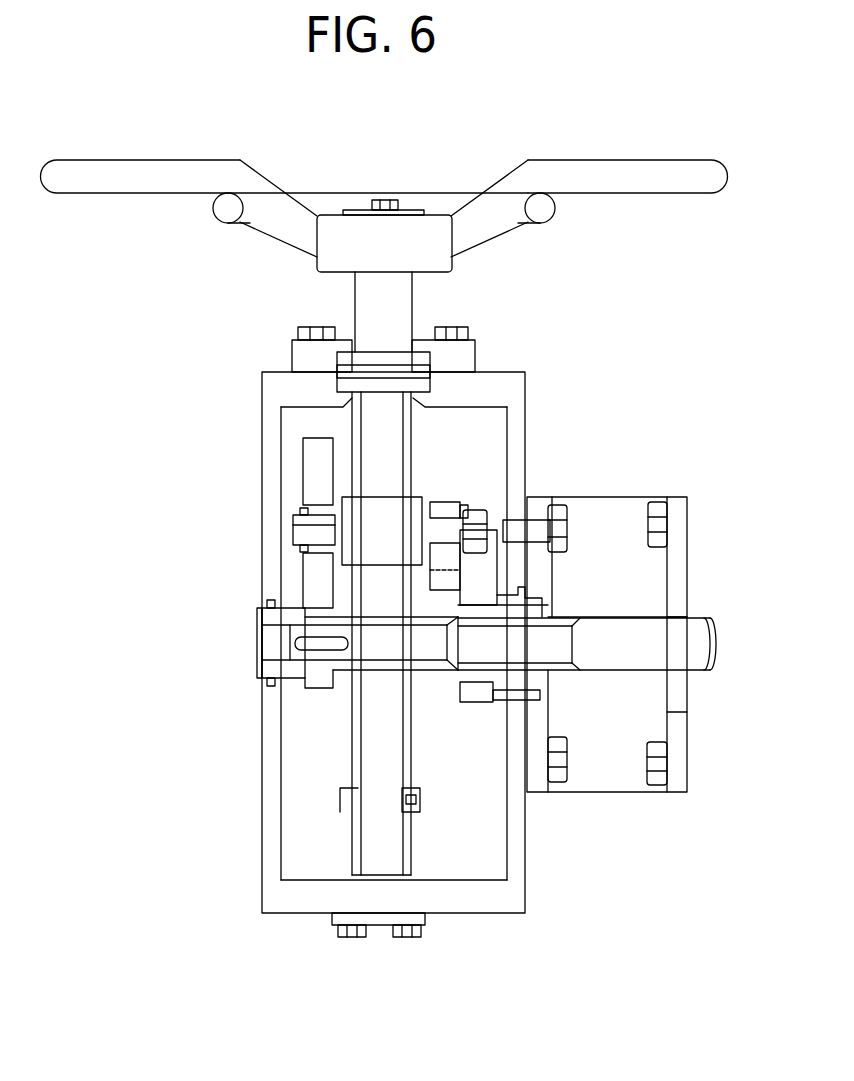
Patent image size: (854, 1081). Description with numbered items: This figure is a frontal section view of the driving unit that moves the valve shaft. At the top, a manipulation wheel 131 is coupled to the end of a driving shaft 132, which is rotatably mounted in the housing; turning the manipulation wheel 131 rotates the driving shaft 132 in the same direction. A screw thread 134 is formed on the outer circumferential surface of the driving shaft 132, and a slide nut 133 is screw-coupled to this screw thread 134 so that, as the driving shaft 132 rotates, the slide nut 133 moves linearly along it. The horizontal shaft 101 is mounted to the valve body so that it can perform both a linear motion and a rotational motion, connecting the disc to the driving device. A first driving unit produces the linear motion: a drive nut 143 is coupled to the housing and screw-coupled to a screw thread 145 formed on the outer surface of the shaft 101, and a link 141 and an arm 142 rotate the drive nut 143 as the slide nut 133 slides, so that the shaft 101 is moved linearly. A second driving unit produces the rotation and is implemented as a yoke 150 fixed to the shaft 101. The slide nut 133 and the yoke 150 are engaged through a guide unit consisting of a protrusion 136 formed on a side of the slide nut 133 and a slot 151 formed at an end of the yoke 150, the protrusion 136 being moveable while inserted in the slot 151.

The shaft 101 is at (658, 650).
The manipulation wheel 131 is at (140, 179).
The driving shaft 132 is at (372, 314).
The slide nut 133 is at (360, 518).
The screw thread 134 is at (356, 418).
The protrusion 136 is at (309, 530).
The link 141 is at (448, 562).
The arm 142 is at (483, 588).
The drive nut 143 is at (518, 610).
The screw thread 145 is at (550, 666).
The yoke 150 is at (316, 471).
The slot 151 is at (320, 595).